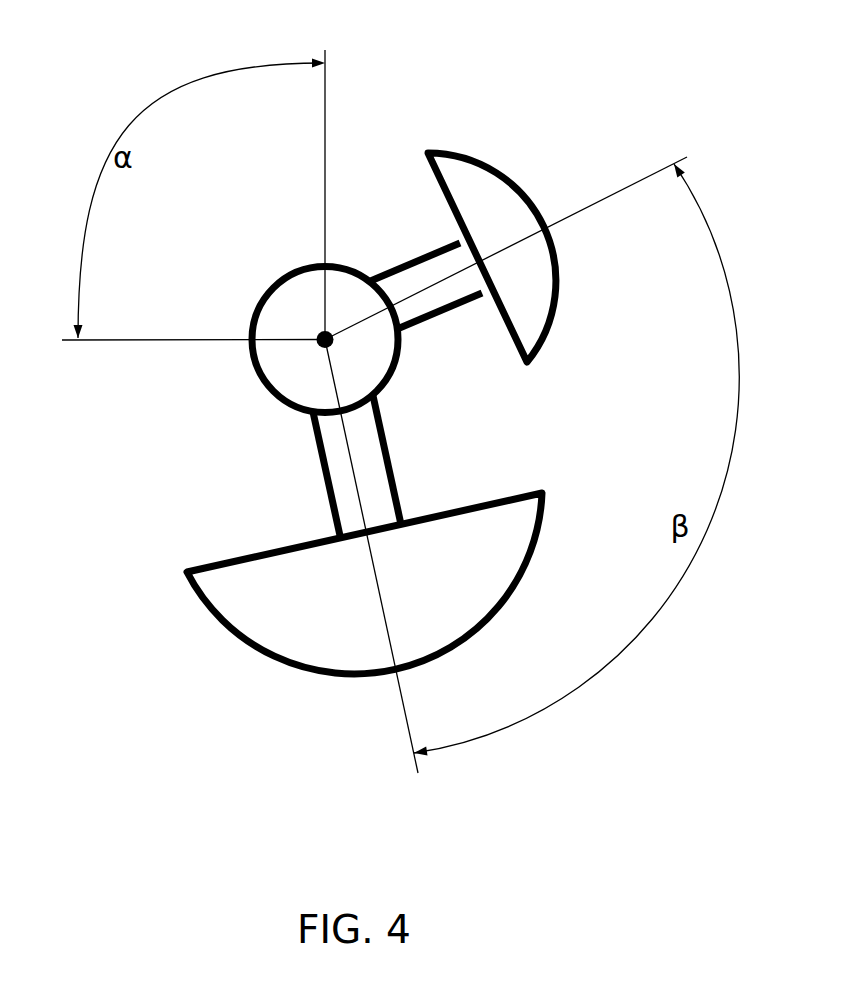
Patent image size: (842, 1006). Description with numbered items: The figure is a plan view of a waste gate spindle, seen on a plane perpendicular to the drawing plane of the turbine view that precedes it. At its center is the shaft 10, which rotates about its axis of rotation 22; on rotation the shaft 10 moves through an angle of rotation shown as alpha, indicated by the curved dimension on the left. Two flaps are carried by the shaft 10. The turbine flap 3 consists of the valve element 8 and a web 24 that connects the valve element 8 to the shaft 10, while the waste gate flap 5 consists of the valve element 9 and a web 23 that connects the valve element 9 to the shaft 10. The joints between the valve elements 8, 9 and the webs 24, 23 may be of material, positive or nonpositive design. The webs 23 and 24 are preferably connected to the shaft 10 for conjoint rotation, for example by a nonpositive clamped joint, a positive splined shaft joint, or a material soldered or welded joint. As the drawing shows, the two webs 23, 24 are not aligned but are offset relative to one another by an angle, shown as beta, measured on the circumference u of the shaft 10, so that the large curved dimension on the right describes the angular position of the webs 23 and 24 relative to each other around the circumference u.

The turbine flap 3 is at (508, 175).
The waste gate flap 5 is at (260, 658).
The valve element 8 is at (484, 234).
The valve element 9 is at (321, 628).
The shaft 10 is at (277, 395).
The axis of rotation 22 is at (325, 340).
The web 23 is at (332, 502).
The web 24 is at (406, 263).
The circumference u is at (392, 387).